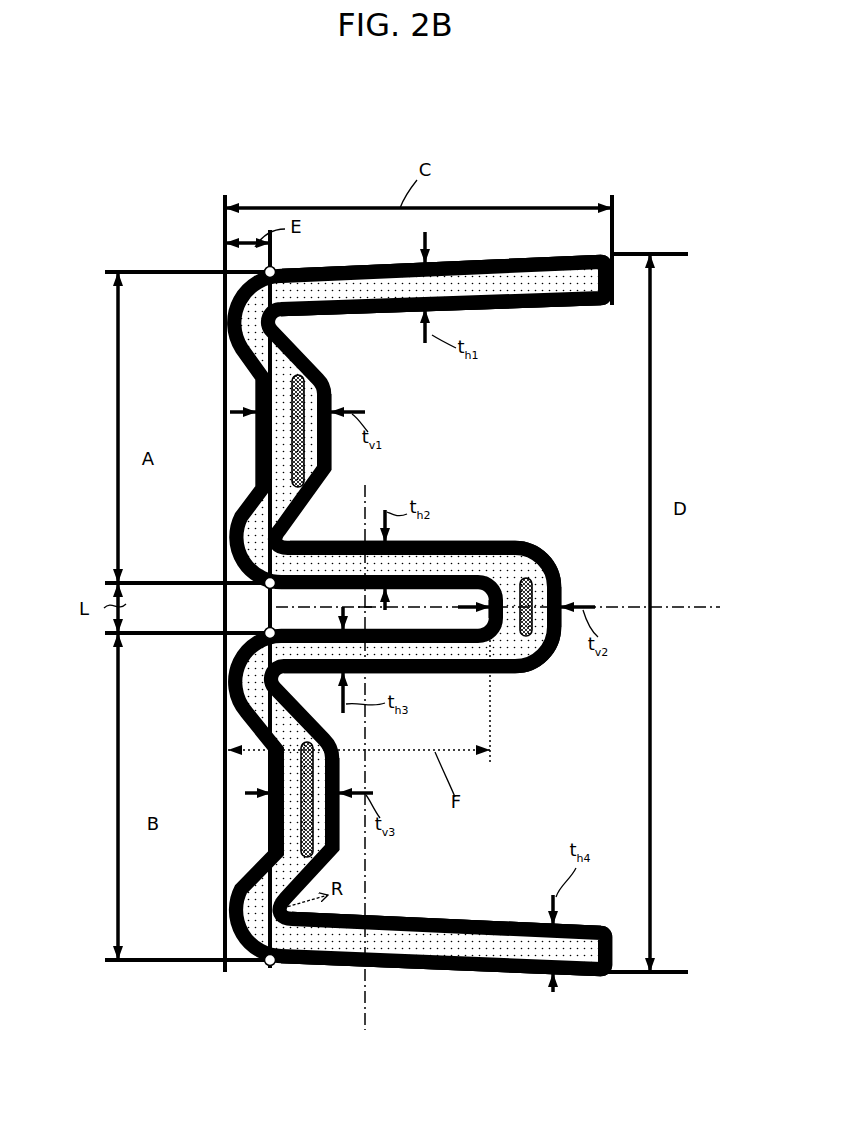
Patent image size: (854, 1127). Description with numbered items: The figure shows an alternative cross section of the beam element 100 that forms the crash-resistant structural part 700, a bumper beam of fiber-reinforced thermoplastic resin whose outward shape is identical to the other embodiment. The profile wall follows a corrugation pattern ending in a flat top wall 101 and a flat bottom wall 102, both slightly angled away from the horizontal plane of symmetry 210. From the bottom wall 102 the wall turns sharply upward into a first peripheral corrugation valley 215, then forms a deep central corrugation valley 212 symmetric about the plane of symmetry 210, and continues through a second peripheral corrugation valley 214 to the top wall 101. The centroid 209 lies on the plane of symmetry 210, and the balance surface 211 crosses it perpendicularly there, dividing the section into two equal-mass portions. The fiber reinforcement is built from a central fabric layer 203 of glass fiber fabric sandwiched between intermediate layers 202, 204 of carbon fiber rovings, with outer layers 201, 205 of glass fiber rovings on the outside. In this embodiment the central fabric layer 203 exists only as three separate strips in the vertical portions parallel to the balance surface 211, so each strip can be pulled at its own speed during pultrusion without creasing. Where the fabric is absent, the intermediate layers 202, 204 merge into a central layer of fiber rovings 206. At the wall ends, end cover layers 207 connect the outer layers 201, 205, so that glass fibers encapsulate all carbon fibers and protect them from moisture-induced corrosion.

The crash-resistant structural part 700 is at (348, 560).
The beam element 100 is at (476, 964).
The top wall 101 is at (520, 319).
The bottom wall 102 is at (486, 905).
The outer layer 201 is at (352, 316).
The intermediate layer 202 is at (334, 410).
The central fabric layer 203 is at (312, 394).
The intermediate layer 204 is at (262, 414).
The outer layer 205 is at (352, 268).
The central layer of fiber rovings 206 is at (572, 306).
The end cover layer 207 is at (613, 298).
The centroid 209 is at (368, 607).
The horizontal plane of symmetry 210 is at (678, 608).
The balance surface 211 is at (368, 1010).
The central corrugation valley 212 is at (246, 607).
The second peripheral corrugation valley 214 is at (244, 448).
The first peripheral corrugation valley 215 is at (254, 844).